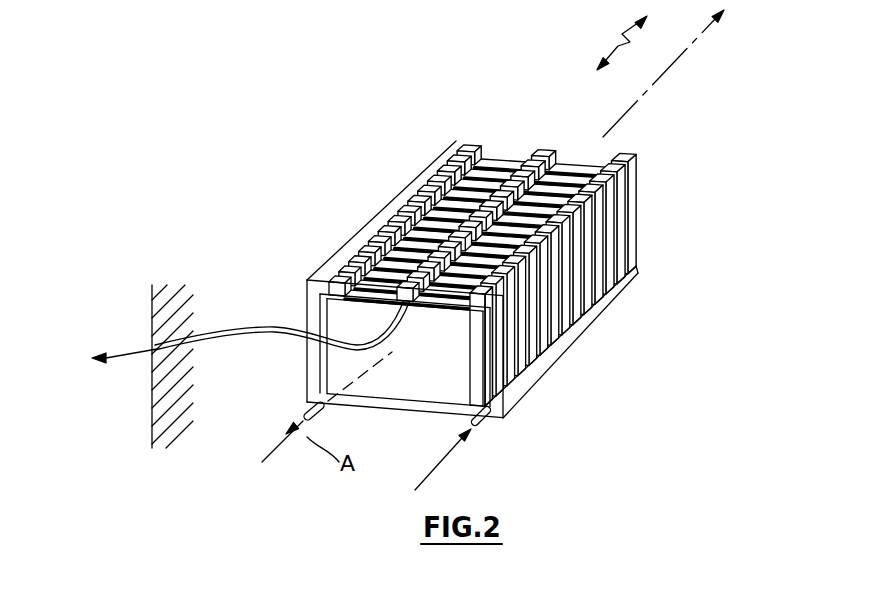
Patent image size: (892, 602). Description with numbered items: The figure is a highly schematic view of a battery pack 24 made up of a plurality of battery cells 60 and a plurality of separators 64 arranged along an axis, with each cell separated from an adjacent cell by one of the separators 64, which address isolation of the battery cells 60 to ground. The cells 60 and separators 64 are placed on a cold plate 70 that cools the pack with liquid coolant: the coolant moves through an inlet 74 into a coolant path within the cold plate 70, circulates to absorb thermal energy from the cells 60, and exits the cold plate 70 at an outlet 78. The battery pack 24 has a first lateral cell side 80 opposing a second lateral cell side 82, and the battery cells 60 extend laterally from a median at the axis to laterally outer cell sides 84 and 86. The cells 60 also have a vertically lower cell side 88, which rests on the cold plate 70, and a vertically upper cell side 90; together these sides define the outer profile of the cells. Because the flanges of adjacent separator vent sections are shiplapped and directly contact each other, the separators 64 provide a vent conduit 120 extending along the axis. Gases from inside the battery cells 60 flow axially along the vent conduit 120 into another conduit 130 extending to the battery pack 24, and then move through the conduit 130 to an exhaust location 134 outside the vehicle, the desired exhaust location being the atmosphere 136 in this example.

The battery pack 24 is at (660, 68).
The battery cells 60 is at (466, 303).
The separators 64 is at (510, 327).
The cold plate 70 is at (507, 405).
The inlet 74 is at (312, 408).
The outlet 78 is at (476, 430).
The first lateral cell side 80 is at (437, 269).
The second lateral cell side 82 is at (692, 218).
The laterally outer cell side 84 is at (323, 370).
The laterally outer cell side 86 is at (484, 355).
The vertically lower cell side 88 is at (384, 403).
The vertically upper cell side 90 is at (366, 293).
The vent conduit 120 is at (520, 170).
The conduit 130 is at (250, 328).
The exhaust location 134 is at (118, 330).
The atmosphere 136 is at (72, 376).